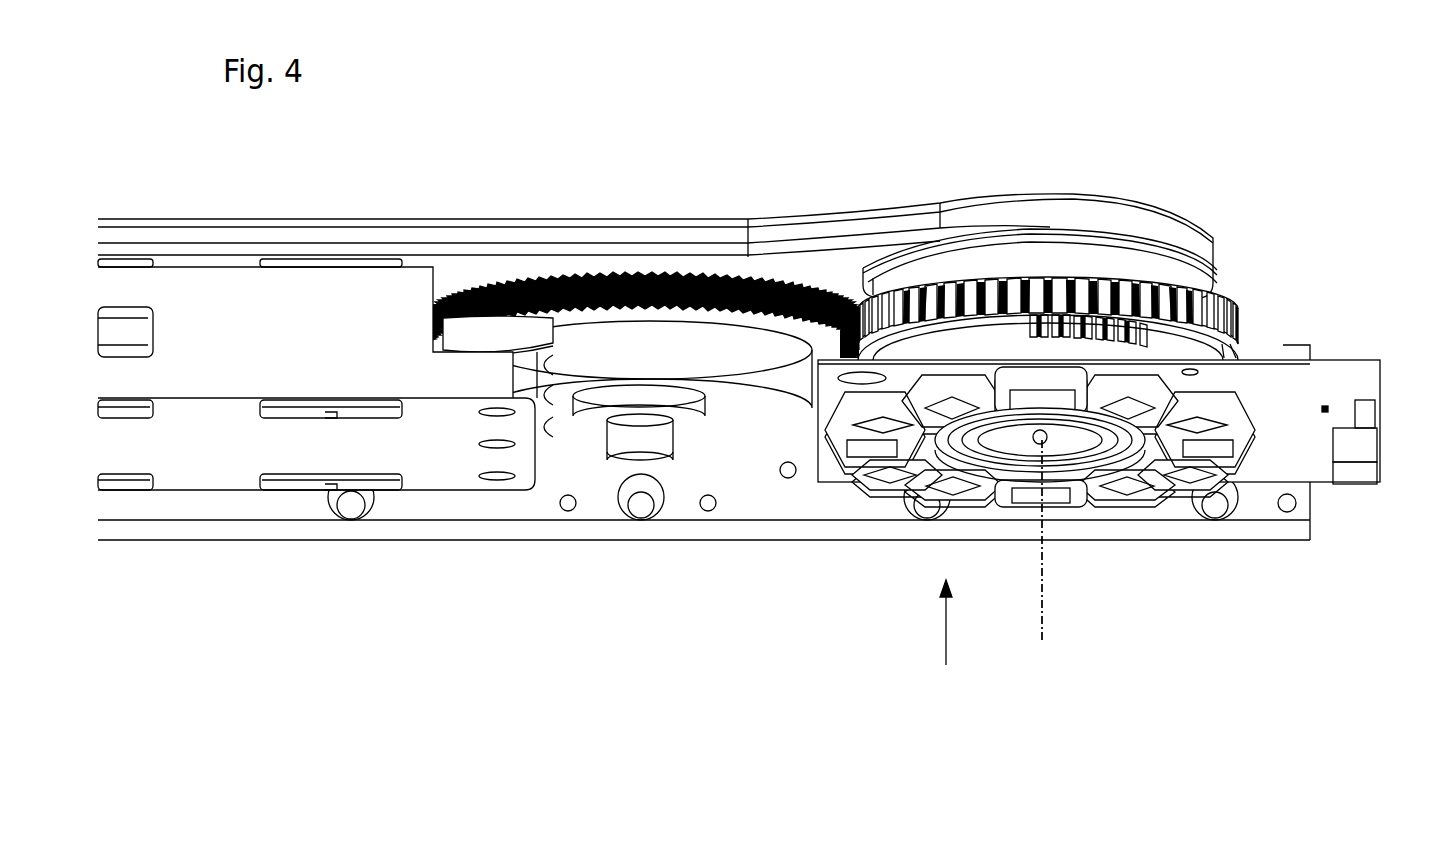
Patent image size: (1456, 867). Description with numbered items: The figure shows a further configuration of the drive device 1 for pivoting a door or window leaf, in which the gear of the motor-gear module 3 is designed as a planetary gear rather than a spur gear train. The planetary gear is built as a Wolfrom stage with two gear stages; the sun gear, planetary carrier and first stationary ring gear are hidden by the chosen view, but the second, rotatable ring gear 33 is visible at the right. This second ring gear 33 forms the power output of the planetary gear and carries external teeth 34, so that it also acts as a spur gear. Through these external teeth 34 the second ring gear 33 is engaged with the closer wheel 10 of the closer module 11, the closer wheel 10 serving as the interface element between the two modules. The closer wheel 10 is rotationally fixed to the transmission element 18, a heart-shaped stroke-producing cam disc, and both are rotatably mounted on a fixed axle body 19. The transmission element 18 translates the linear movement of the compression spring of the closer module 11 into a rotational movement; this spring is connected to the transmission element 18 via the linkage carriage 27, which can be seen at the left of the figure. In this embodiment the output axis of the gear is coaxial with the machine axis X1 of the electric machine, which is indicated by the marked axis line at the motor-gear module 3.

The drive device 1 is at (486, 172).
The motor-gear module 3 is at (949, 655).
The closer wheel 10 is at (596, 307).
The closer module 11 is at (452, 572).
The transmission element 18 is at (722, 423).
The axle body 19 is at (636, 462).
The linkage carriage 27 is at (245, 448).
The second ring gear 33 is at (1058, 280).
The external teeth 34 is at (1227, 312).
The machine axis X1 is at (1047, 560).